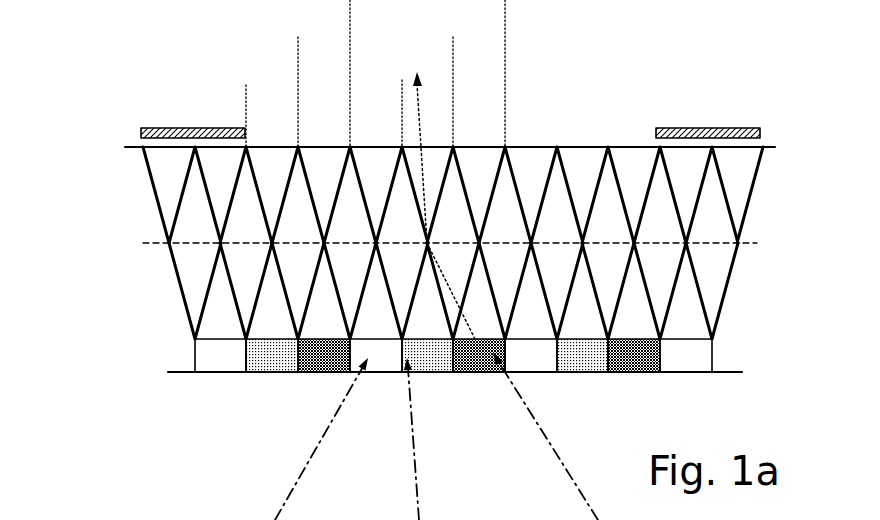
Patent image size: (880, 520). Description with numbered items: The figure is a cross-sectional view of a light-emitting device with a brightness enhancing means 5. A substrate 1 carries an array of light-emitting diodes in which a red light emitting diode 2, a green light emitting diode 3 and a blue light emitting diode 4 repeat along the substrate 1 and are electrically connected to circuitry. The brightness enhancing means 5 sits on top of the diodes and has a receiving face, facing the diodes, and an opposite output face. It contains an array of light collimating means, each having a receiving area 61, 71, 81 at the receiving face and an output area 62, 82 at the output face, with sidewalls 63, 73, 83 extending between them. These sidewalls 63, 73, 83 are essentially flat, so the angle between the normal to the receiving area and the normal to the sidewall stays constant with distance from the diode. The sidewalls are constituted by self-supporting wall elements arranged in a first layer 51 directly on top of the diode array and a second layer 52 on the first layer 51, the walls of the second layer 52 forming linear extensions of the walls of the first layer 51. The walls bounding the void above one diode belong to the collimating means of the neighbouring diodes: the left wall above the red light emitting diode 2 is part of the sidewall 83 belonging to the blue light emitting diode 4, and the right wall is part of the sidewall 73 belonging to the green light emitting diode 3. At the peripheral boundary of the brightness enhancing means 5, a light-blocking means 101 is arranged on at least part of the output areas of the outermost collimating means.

The substrate 1 is at (742, 372).
The red light emitting diode 2 is at (219, 365).
The green light emitting diode 3 is at (277, 365).
The blue light emitting diode 4 is at (325, 365).
The brightness enhancing means 5 is at (438, 214).
The first layer 51 is at (98, 243).
The second layer 52 is at (400, 167).
The receiving area 61 is at (400, 333).
The output area 62 is at (453, 40).
The sidewall 63 is at (308, 178).
The receiving area 71 is at (452, 333).
The sidewall 73 is at (362, 183).
The receiving area 81 is at (350, 333).
The output area 82 is at (402, 86).
The sidewall 83 is at (258, 180).
The light-blocking means 101 is at (190, 128).